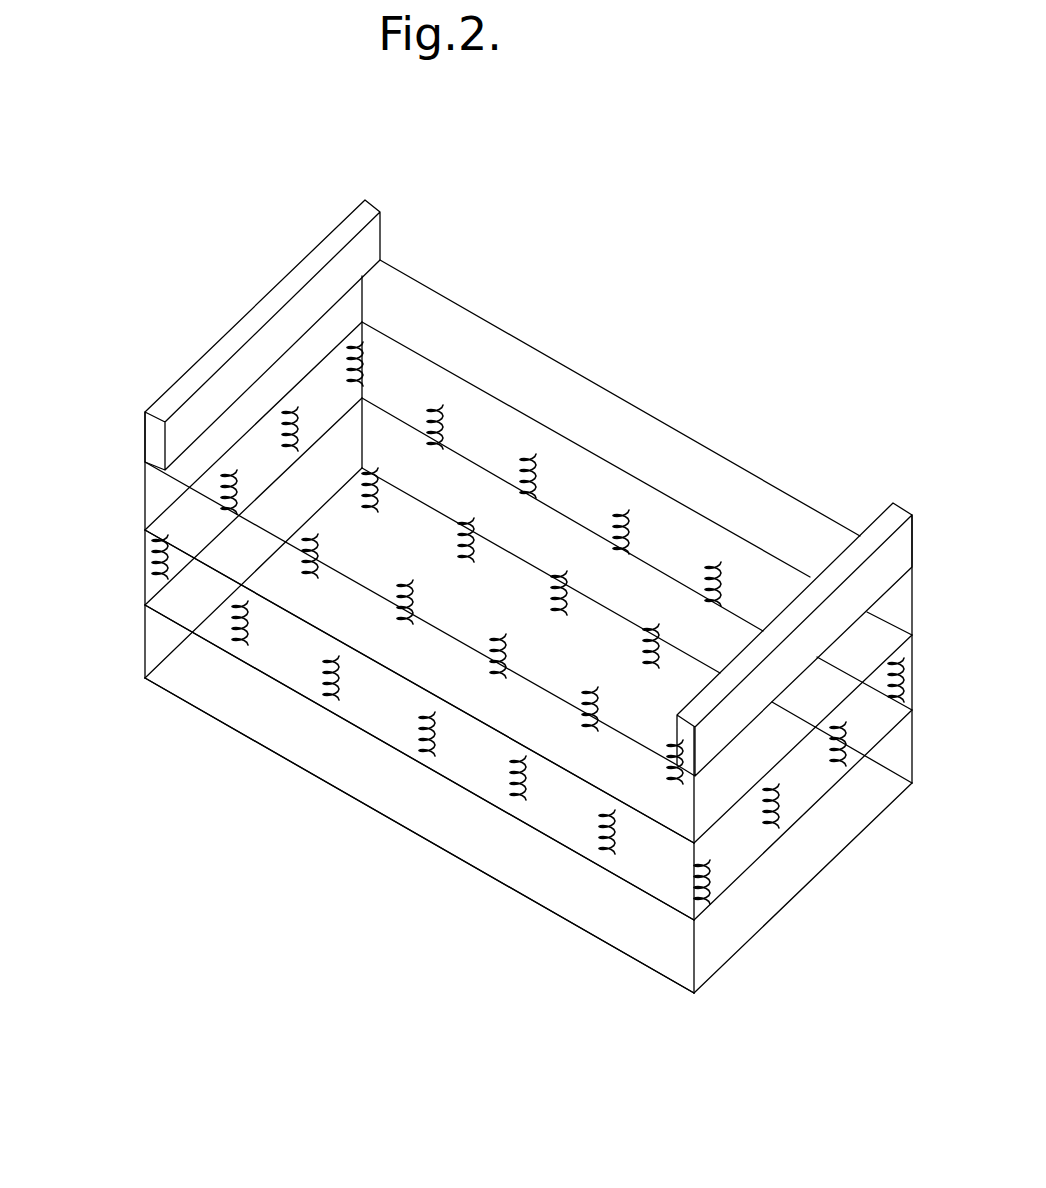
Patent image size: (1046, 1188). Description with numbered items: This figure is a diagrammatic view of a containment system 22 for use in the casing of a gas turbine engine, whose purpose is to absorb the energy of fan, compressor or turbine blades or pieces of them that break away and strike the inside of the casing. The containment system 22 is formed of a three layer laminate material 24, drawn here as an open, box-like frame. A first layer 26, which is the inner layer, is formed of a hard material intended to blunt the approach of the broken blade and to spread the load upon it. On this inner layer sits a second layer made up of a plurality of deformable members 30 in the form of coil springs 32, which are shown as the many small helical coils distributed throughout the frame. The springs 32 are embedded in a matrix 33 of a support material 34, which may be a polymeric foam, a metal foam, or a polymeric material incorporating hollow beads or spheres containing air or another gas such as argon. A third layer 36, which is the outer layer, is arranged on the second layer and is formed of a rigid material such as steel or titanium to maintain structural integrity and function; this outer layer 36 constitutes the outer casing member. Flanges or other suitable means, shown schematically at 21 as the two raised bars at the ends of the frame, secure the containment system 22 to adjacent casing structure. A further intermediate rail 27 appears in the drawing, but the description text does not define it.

The flanges 21 is at (357, 218).
The containment system 22 is at (300, 225).
The three layer laminate material 24 is at (656, 404).
The first layer 26 is at (250, 742).
The intermediate rail 27 is at (143, 590).
The deformable members 30 is at (536, 812).
The coil springs 32 is at (442, 425).
The matrix 33 is at (148, 560).
The support material 34 is at (877, 727).
The third layer 36 is at (272, 383).